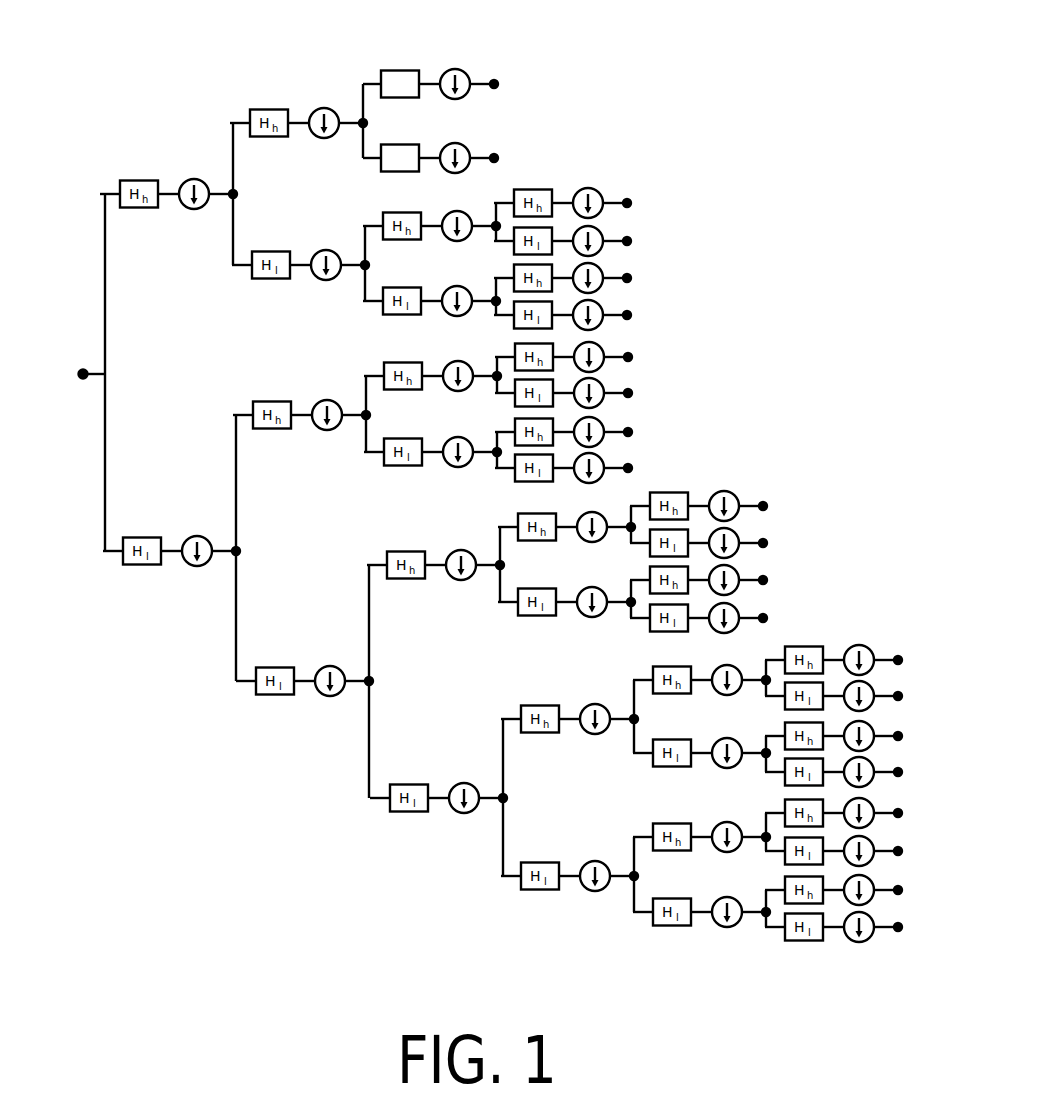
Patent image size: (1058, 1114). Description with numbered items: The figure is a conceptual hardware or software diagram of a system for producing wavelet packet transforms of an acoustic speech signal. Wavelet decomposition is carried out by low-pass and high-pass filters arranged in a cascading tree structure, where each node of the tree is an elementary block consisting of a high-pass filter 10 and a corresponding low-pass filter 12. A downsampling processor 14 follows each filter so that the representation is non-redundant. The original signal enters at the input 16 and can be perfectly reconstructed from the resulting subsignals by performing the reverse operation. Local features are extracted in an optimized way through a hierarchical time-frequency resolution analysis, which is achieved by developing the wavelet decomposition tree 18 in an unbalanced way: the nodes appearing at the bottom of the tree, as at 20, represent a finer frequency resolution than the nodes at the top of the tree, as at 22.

The high-pass filter 10 is at (410, 70).
The low-pass filter 12 is at (396, 172).
The downsampling processor 14 is at (426, 106).
The input 16 is at (67, 369).
The wavelet decomposition tree 18 is at (787, 349).
The nodes at the bottom of the tree 20 is at (923, 690).
The nodes at the top of the tree 22 is at (370, 169).